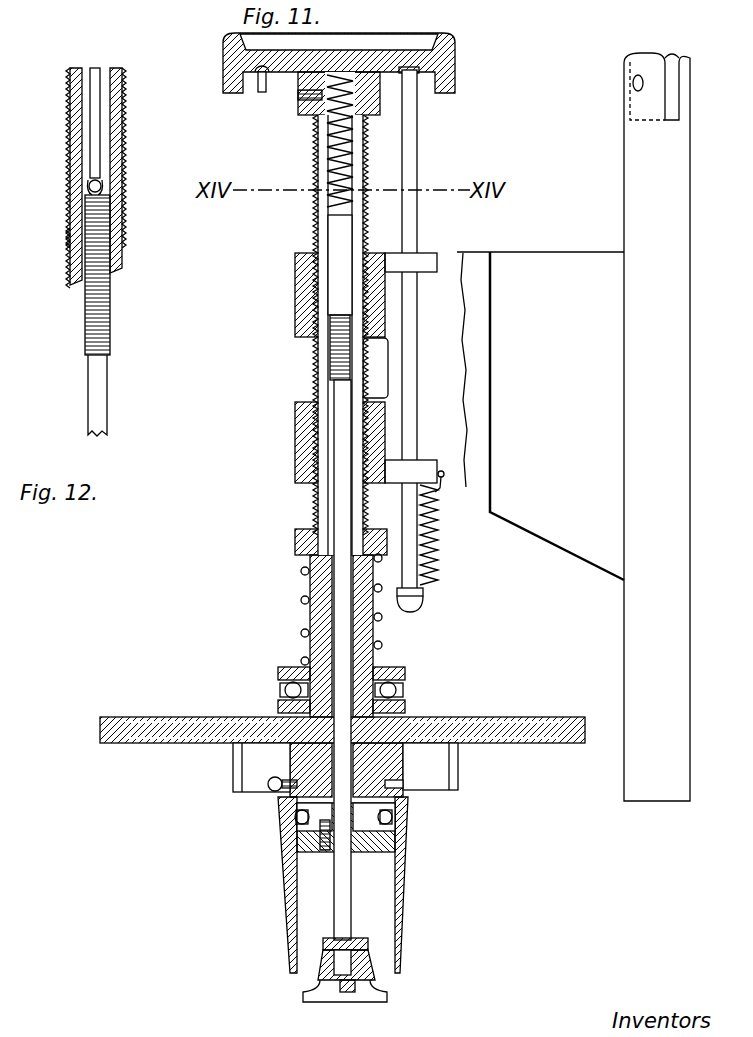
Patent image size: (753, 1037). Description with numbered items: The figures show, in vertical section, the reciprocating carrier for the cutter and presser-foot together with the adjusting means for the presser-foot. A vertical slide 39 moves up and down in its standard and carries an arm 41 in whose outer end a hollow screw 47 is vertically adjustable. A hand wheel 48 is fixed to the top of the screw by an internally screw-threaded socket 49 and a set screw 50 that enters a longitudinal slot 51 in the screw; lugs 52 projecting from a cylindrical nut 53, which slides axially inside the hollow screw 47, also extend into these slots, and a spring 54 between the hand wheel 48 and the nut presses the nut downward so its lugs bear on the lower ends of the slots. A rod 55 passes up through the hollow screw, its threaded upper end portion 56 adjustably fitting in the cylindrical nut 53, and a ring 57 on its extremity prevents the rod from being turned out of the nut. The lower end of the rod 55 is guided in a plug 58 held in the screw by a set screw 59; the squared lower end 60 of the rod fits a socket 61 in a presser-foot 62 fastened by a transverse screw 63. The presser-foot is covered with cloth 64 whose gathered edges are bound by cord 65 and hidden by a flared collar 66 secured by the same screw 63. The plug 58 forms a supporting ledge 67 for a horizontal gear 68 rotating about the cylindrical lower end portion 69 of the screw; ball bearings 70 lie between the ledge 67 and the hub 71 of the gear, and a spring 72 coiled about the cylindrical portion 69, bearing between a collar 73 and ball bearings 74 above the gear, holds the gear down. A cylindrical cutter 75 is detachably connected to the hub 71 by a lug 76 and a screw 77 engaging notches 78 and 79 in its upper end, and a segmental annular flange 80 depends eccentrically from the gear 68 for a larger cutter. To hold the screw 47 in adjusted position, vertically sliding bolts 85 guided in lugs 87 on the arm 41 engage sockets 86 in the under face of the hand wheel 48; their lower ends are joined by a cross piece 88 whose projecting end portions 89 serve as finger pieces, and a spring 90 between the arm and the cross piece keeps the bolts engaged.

In FIG. 11, the vertical slide 39 is at (655, 352).
In FIG. 11, the arm 41 is at (534, 382).
In FIG. 11, the hollow screw 47 is at (318, 362).
In FIG. 12, the hollow screw 47 is at (72, 237).
In FIG. 11, the hand wheel 48 is at (455, 70).
In FIG. 11, the internally screw-threaded socket 49 is at (372, 102).
In FIG. 11, the set screw 50 is at (298, 97).
In FIG. 11, the longitudinal slot 51 is at (316, 135).
In FIG. 12, the longitudinal slot 51 is at (92, 122).
In FIG. 11, the lug 52 is at (325, 230).
In FIG. 11, the cylindrical nut 53 is at (330, 275).
In FIG. 12, the cylindrical nut 53 is at (85, 302).
In FIG. 11, the spring 54 is at (355, 150).
In FIG. 11, the rod 55 is at (338, 495).
In FIG. 12, the rod 55 is at (100, 385).
In FIG. 11, the threaded upper end portion 56 is at (335, 378).
In FIG. 12, the ring 57 is at (101, 188).
In FIG. 11, the plug 58 is at (372, 852).
In FIG. 11, the set screw 59 is at (323, 850).
In FIG. 11, the squared lower end 60 is at (325, 975).
In FIG. 11, the socket 61 is at (350, 1002).
In FIG. 11, the presser-foot 62 is at (335, 1002).
In FIG. 11, the transverse screw 63 is at (370, 946).
In FIG. 11, the cloth 64 is at (308, 1000).
In FIG. 11, the cord 65 is at (372, 978).
In FIG. 11, the flared collar 66 is at (330, 965).
In FIG. 11, the supporting ledge 67 is at (392, 830).
In FIG. 11, the horizontal gear 68 is at (500, 717).
In FIG. 11, the cylindrical lower end portion 69 is at (370, 660).
In FIG. 11, the ball bearings 70 is at (296, 818).
In FIG. 11, the hub 71 is at (458, 768).
In FIG. 11, the spring 72 is at (301, 600).
In FIG. 11, the collar 73 is at (295, 543).
In FIG. 11, the ball bearings 74 is at (278, 684).
In FIG. 11, the cylindrical cutter 75 is at (280, 915).
In FIG. 11, the lug 76 is at (410, 790).
In FIG. 11, the screw 77 is at (272, 790).
In FIG. 11, the notch 78 is at (420, 745).
In FIG. 11, the notch 79 is at (285, 762).
In FIG. 11, the segmental annular flange 80 is at (233, 765).
In FIG. 11, the vertically sliding bolt 85 is at (410, 231).
In FIG. 11, the socket 86 is at (262, 76).
In FIG. 11, the lug 87 is at (420, 268).
In FIG. 11, the cross piece 88 is at (424, 590).
In FIG. 11, the projecting end portion 89 is at (418, 606).
In FIG. 11, the spring 90 is at (438, 529).